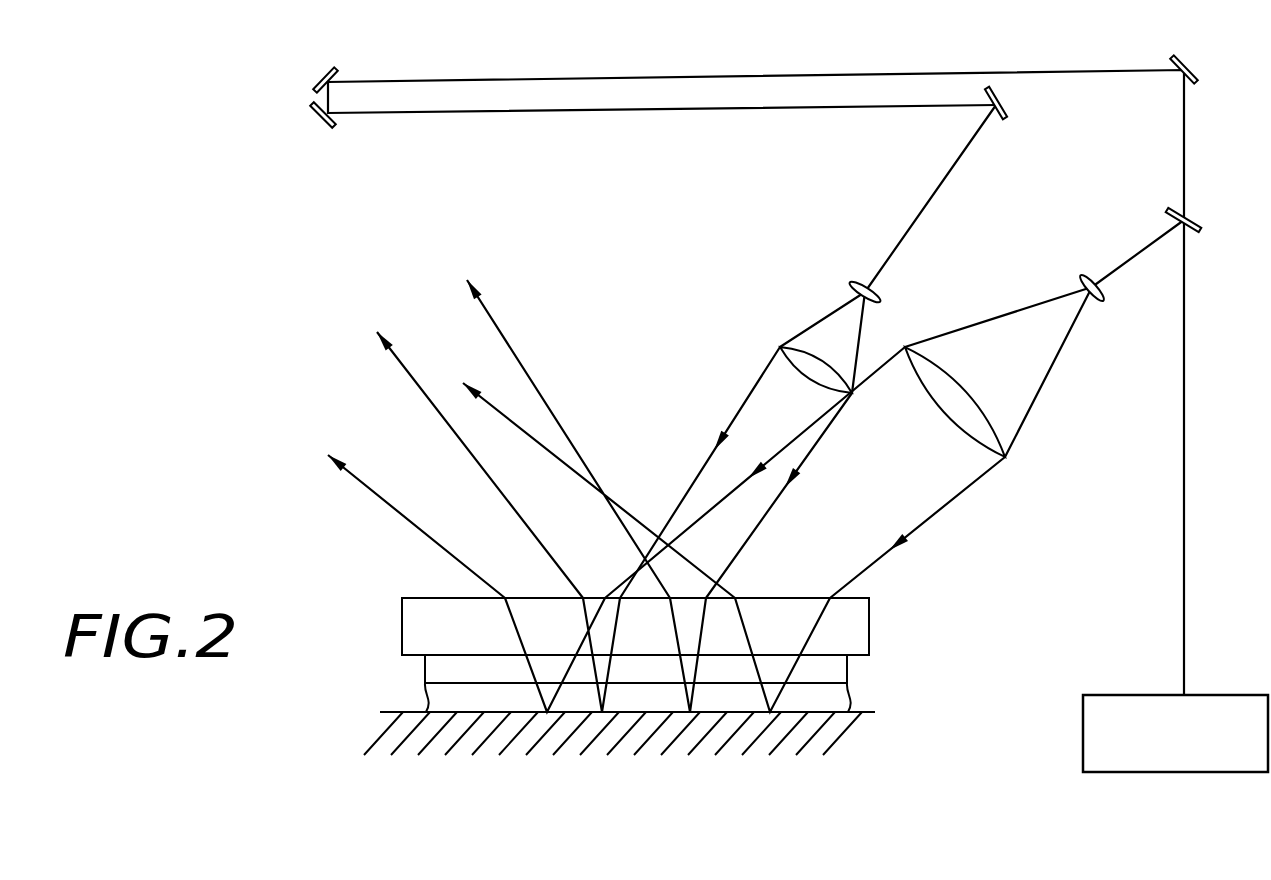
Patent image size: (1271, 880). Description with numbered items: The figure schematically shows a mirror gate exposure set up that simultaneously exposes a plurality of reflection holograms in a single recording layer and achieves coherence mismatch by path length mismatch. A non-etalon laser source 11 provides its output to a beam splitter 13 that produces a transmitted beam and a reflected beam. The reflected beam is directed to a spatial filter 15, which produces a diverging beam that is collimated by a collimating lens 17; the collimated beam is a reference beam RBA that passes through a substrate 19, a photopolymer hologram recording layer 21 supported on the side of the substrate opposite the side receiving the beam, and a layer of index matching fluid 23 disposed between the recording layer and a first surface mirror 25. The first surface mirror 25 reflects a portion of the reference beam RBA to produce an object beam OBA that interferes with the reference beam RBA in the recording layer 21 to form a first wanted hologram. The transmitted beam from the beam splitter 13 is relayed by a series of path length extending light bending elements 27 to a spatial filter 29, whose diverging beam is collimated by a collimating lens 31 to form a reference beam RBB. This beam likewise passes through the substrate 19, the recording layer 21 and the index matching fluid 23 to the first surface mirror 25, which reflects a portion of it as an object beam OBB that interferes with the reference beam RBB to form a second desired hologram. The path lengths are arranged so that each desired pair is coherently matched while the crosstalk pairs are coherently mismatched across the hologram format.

The non-etalon laser source 11 is at (1103, 694).
The beam splitter 13 is at (1200, 226).
The spatial filter 15 is at (1104, 294).
The collimating lens 17 is at (972, 404).
The substrate 19 is at (870, 627).
The photopolymer hologram recording layer 21 is at (848, 668).
The layer of index matching fluid 23 is at (836, 697).
The first surface mirror 25 is at (852, 728).
The path length extending light bending elements 27 is at (320, 80).
The spatial filter 29 is at (880, 296).
The collimating lens 31 is at (800, 350).
The reference beam RBA is at (960, 492).
The reference beam RBB is at (748, 403).
The object beam OBA is at (758, 712).
The object beam OBB is at (686, 712).